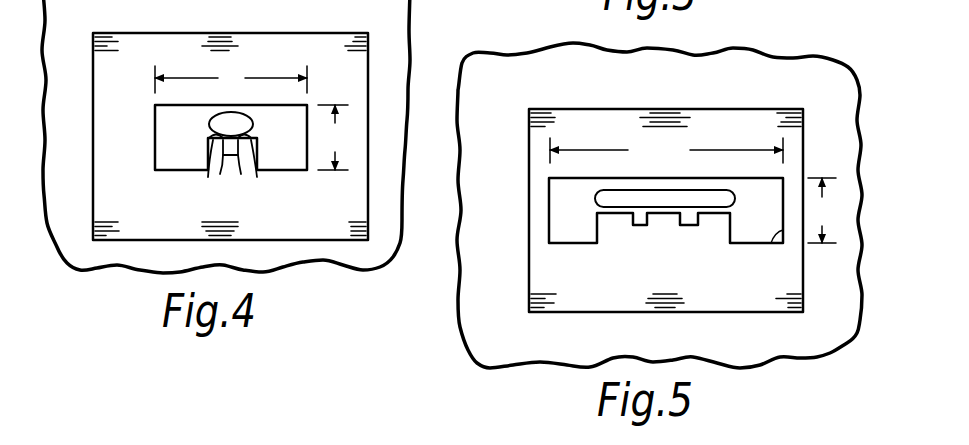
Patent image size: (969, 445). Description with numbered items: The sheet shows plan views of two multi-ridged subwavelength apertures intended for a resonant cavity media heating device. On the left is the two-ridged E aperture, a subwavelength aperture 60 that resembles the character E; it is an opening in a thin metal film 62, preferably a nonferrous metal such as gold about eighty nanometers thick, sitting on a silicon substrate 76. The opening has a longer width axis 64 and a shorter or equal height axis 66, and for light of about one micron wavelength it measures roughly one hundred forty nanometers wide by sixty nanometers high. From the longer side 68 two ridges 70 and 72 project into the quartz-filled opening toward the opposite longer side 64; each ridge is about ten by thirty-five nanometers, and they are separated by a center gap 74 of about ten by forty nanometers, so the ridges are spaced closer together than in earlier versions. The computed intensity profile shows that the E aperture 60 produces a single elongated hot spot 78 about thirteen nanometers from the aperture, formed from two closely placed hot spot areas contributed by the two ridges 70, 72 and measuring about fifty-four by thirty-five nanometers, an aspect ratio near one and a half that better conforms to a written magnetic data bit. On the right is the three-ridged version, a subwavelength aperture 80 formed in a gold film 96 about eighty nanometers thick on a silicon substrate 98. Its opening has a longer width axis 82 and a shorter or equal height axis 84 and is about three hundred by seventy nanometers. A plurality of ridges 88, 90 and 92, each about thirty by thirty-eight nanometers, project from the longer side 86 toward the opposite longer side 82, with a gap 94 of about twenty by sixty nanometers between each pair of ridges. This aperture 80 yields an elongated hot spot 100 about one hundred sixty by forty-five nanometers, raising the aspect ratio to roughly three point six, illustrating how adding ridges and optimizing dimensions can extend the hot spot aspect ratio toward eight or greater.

In FIG. 4, the silicon substrate 76 is at (100, 22).
In FIG. 4, the thin metal film 62 is at (140, 91).
In FIG. 4, the width (W) axis 64 is at (242, 104).
In FIG. 4, the subwavelength aperture 60 is at (183, 128).
In FIG. 4, the elongated hot spot 78 is at (242, 124).
In FIG. 4, the height (H) axis 66 is at (155, 150).
In FIG. 4, the longer side 68 is at (163, 171).
In FIG. 4, the ridge 70 is at (201, 173).
In FIG. 4, the center gap 74 is at (233, 178).
In FIG. 4, the ridge 72 is at (264, 173).
In FIG. 5, the silicon substrate 98 is at (597, 89).
In FIG. 5, the gold film 96 is at (528, 120).
In FIG. 5, the width (W) axis 82 is at (637, 178).
In FIG. 5, the elongated hot spot 100 is at (669, 190).
In FIG. 5, the subwavelength aperture 80 is at (570, 213).
In FIG. 5, the height (H) axis 84 is at (548, 228).
In FIG. 5, the longer side 86 is at (577, 245).
In FIG. 5, the ridge 88 is at (614, 214).
In FIG. 5, the ridge 90 is at (668, 214).
In FIG. 5, the gap 94 is at (690, 228).
In FIG. 5, the ridge 92 is at (707, 214).